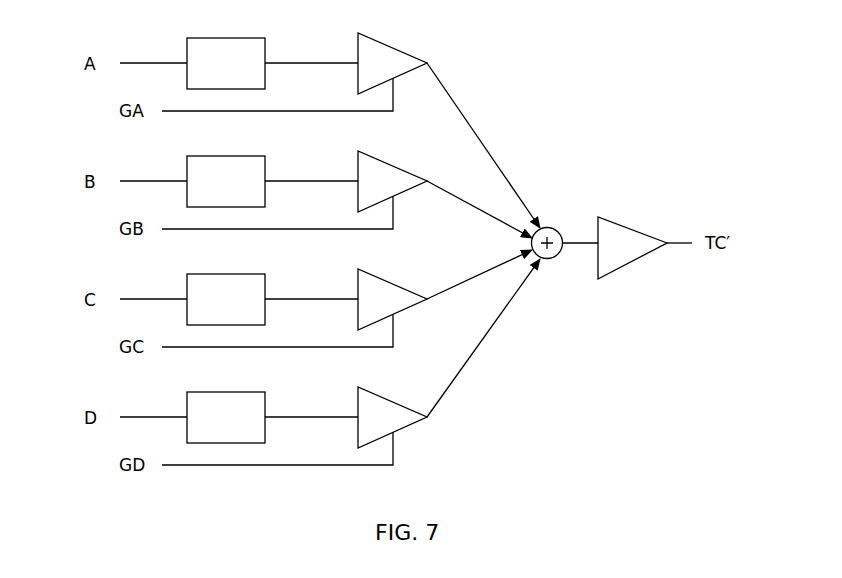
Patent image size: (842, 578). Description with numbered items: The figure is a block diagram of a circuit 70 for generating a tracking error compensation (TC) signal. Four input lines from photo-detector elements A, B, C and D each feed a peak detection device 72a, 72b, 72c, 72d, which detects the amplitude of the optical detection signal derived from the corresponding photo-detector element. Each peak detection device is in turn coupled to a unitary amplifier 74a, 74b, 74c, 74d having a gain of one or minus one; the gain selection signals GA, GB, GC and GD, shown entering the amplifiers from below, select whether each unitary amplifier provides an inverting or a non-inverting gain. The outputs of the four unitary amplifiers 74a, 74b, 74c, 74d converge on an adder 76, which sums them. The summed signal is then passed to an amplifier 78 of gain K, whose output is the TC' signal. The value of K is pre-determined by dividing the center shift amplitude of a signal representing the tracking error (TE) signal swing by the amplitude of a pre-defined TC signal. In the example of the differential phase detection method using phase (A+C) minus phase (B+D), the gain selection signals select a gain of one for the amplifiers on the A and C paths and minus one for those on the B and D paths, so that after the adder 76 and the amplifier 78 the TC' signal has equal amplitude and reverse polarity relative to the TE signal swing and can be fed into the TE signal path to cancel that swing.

The circuit 70 is at (574, 50).
The peak detection device 72a is at (242, 38).
The peak detection device 72b is at (242, 156).
The peak detection device 72c is at (242, 274).
The peak detection device 72d is at (242, 392).
The unitary amplifier 74a is at (399, 51).
The unitary amplifier 74b is at (399, 169).
The unitary amplifier 74c is at (399, 287).
The unitary amplifier 74d is at (399, 405).
The adder 76 is at (549, 259).
The amplifier 78 is at (637, 264).